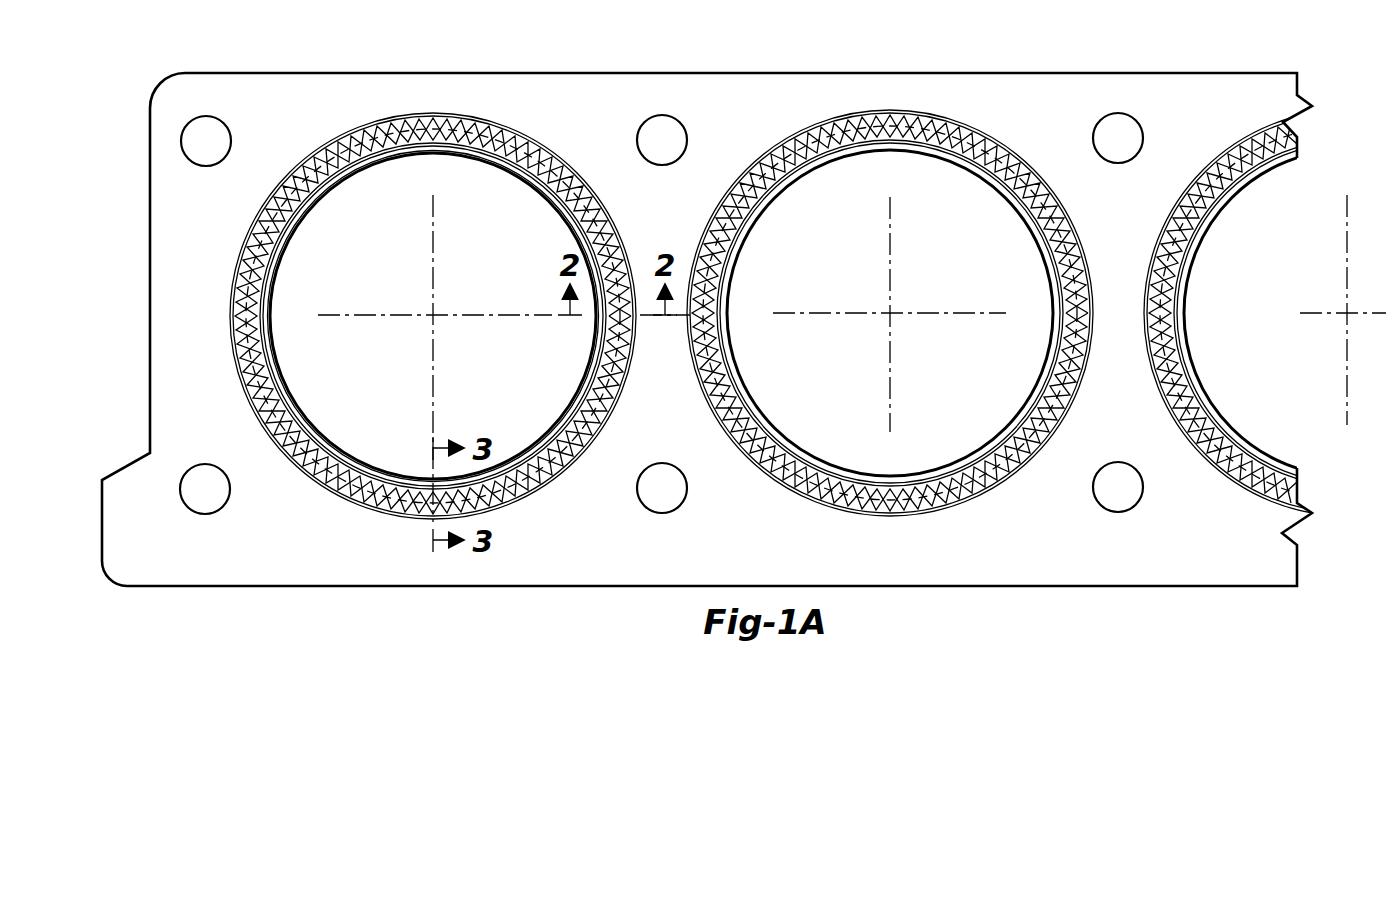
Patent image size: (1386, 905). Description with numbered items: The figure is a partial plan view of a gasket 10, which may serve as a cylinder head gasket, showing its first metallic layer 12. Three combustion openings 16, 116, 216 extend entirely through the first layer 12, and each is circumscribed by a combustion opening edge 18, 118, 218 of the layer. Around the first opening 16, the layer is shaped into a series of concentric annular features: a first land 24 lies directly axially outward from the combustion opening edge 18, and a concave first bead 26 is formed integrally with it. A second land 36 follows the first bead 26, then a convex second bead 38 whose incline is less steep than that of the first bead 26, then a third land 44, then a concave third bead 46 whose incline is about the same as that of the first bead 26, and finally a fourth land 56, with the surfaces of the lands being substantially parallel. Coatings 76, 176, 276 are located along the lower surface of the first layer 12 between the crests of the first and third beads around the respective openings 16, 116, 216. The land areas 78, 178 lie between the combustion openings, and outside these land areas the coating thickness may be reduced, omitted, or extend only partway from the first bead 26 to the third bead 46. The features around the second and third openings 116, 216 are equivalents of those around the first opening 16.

The gasket 10 is at (707, 365).
The first metallic layer 12 is at (719, 545).
The combustion opening 16 is at (364, 368).
The combustion opening edge 18 is at (576, 401).
The first land 24 is at (553, 193).
The first bead 26 is at (528, 118).
The second land 36 is at (502, 110).
The second bead 38 is at (538, 140).
The third land 44 is at (502, 122).
The third bead 46 is at (450, 112).
The fourth land 56 is at (567, 162).
The coating 76 is at (445, 281).
The land area 78 is at (652, 358).
The combustion opening 116 is at (808, 270).
The combustion opening edge 118 is at (755, 403).
The coating 176 is at (907, 310).
The land area 178 is at (1115, 250).
The combustion opening 216 is at (1218, 335).
The combustion opening edge 218 is at (1213, 410).
The coating 276 is at (1173, 390).